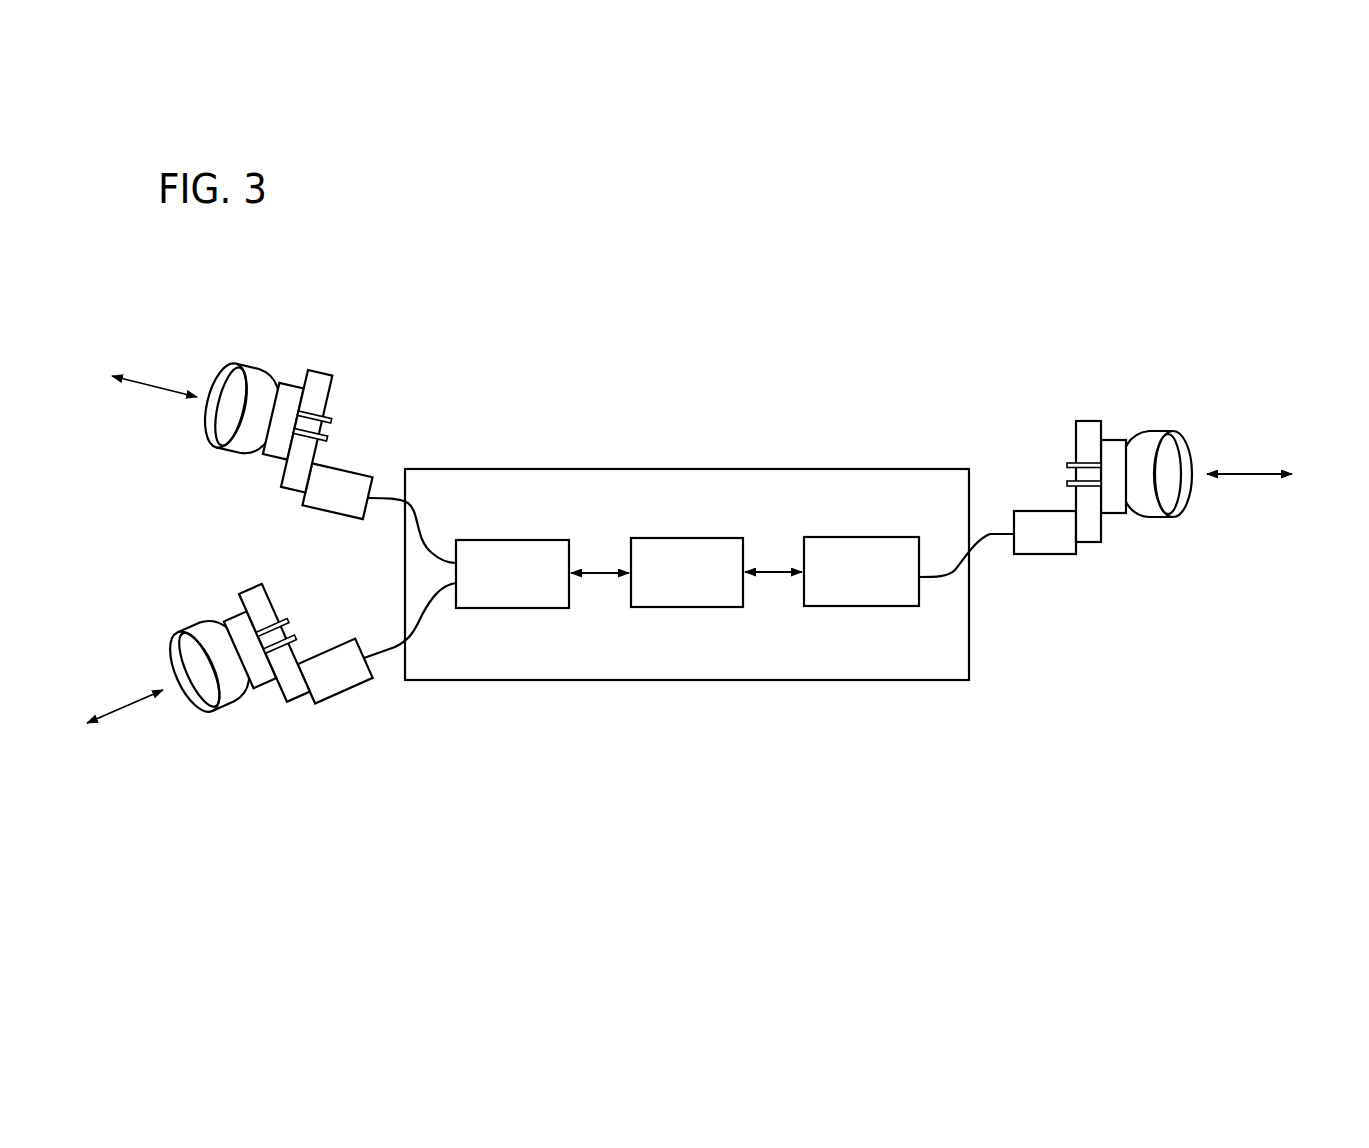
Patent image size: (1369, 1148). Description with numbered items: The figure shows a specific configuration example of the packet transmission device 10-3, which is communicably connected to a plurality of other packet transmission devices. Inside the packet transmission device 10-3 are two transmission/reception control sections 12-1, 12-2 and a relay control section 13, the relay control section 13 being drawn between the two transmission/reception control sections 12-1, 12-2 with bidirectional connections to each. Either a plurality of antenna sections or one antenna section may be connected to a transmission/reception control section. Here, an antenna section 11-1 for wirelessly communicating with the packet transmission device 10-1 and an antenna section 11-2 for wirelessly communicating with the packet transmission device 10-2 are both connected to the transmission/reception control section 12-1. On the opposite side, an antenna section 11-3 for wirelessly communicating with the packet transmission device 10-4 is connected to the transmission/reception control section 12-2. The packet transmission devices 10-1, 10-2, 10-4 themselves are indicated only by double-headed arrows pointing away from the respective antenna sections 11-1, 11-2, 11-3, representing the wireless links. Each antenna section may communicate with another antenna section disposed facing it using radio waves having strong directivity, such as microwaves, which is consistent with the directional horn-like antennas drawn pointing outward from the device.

The packet transmission device 10-1 is at (130, 337).
The packet transmission device 10-2 is at (118, 754).
The packet transmission device 10-3 is at (976, 331).
The packet transmission device 10-4 is at (1271, 523).
The antenna section 11-1 is at (347, 348).
The antenna section 11-2 is at (296, 702).
The antenna section 11-3 is at (1116, 402).
The transmission/reception control section 12-1 is at (532, 539).
The transmission/reception control section 12-2 is at (880, 536).
The relay control section 13 is at (705, 538).